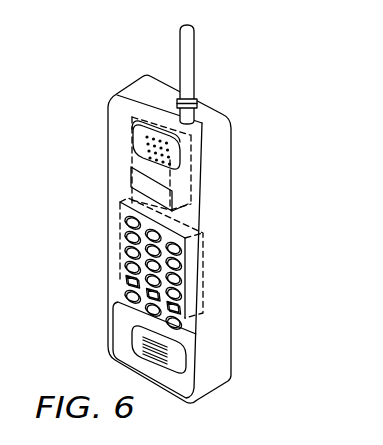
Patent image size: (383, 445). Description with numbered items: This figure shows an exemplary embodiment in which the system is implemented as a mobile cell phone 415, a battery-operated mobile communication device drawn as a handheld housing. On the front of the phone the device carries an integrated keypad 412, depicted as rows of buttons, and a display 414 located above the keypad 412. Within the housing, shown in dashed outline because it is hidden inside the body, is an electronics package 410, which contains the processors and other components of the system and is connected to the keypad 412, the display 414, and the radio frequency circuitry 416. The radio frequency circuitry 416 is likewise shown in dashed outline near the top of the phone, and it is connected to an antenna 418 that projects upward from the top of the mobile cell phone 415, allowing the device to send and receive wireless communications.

The electronics package 410 is at (206, 281).
The keypad 412 is at (123, 257).
The display 414 is at (130, 197).
The mobile cell phone 415 is at (232, 333).
The radio frequency circuitry 416 is at (131, 160).
The antenna 418 is at (190, 62).